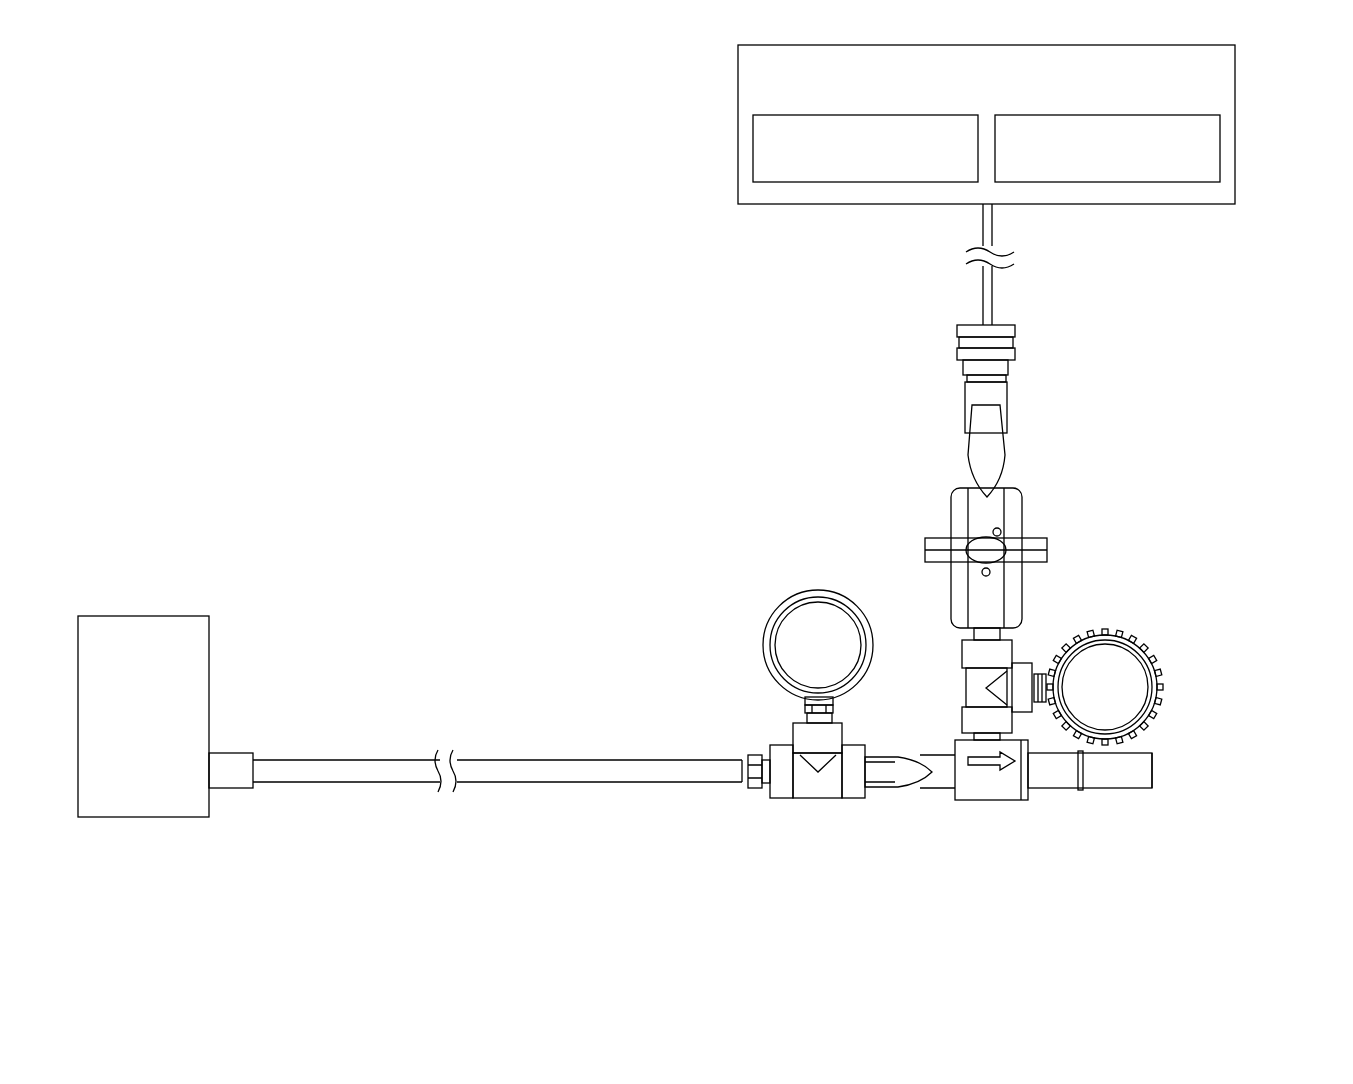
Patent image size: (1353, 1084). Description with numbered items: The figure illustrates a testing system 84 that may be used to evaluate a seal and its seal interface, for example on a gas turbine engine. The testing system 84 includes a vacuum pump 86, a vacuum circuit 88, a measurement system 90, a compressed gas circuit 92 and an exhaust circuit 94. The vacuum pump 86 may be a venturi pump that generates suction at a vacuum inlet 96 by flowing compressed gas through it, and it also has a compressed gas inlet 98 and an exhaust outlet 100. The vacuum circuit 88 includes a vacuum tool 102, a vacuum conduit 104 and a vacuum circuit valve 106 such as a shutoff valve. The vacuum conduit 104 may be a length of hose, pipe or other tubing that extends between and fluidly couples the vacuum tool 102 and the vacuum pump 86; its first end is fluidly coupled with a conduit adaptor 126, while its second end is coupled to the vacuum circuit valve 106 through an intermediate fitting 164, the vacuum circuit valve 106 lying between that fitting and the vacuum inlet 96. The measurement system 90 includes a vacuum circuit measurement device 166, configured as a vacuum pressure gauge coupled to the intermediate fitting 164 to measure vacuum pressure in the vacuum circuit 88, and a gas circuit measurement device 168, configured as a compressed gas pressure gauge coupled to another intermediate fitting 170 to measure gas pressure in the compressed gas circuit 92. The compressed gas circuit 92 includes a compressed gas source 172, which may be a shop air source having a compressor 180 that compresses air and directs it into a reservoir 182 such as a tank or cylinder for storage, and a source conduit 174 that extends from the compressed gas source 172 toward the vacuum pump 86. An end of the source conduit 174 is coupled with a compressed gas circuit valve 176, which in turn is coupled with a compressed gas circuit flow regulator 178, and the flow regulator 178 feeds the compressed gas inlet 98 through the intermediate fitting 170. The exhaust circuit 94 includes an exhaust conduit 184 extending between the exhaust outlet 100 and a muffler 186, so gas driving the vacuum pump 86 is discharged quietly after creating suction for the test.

The testing system 84 is at (426, 188).
The vacuum pump 86 is at (987, 816).
The vacuum circuit 88 is at (522, 602).
The measurement system 90 is at (790, 537).
The compressed gas circuit 92 is at (1114, 372).
The exhaust circuit 94 is at (1106, 830).
The vacuum inlet 96 is at (918, 800).
The compressed gas inlet 98 is at (965, 740).
The exhaust outlet 100 is at (1090, 791).
The vacuum tool 102 is at (135, 605).
The vacuum conduit 104 is at (380, 798).
The vacuum circuit valve 106 is at (881, 808).
The conduit adaptor 126 is at (232, 790).
The intermediate fitting 164 is at (806, 800).
The vacuum circuit measurement device 166 is at (750, 630).
The gas circuit measurement device 168 is at (1240, 625).
The intermediate fitting 170 is at (962, 688).
The compressed gas source 172 is at (724, 73).
The source conduit 174 is at (1010, 273).
The compressed gas circuit valve 176 is at (1030, 460).
The compressed gas circuit flow regulator 178 is at (1060, 520).
The compressor 180 is at (1236, 148).
The reservoir 182 is at (752, 146).
The exhaust conduit 184 is at (1100, 789).
The muffler 186 is at (1137, 789).